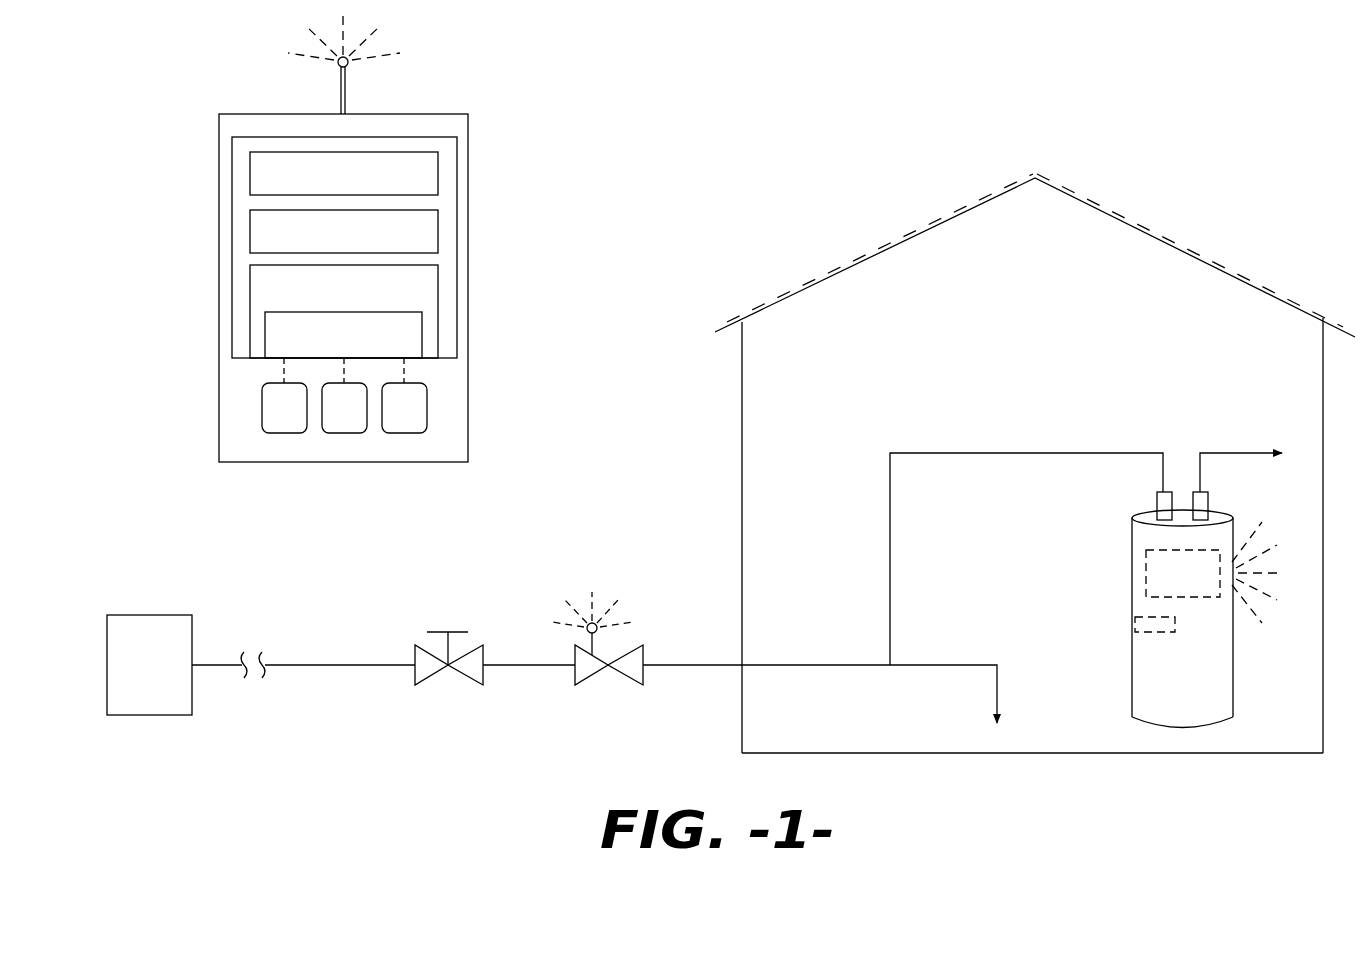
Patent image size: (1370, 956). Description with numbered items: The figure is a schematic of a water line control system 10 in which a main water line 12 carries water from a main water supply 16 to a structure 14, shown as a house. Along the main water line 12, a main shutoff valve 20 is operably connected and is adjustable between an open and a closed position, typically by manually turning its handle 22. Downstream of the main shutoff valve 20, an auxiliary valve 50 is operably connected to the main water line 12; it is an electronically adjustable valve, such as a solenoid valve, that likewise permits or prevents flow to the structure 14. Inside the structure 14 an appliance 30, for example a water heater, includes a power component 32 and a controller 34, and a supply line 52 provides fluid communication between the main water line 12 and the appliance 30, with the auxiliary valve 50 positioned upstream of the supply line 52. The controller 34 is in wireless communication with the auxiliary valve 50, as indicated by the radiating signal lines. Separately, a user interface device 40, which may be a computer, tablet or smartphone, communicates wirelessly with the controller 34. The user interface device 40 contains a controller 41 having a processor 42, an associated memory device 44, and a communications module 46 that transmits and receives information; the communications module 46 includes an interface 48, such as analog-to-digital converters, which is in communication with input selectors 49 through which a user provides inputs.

The water line control system 10 is at (797, 222).
The main water line 12 is at (337, 663).
The structure 14 is at (727, 476).
The main water supply 16 is at (163, 677).
The main shutoff valve 20 is at (437, 689).
The handle 22 is at (440, 628).
The appliance 30 is at (1251, 648).
The power component 32 is at (1150, 636).
The controller 34 is at (1145, 570).
The user interface device 40 is at (188, 123).
The controller 41 is at (460, 153).
The processor 42 is at (441, 182).
The memory device 44 is at (441, 240).
The communications module 46 is at (441, 300).
The interface 48 is at (425, 338).
The input selectors 49 is at (348, 418).
The auxiliary valve 50 is at (597, 690).
The supply line 52 is at (889, 533).